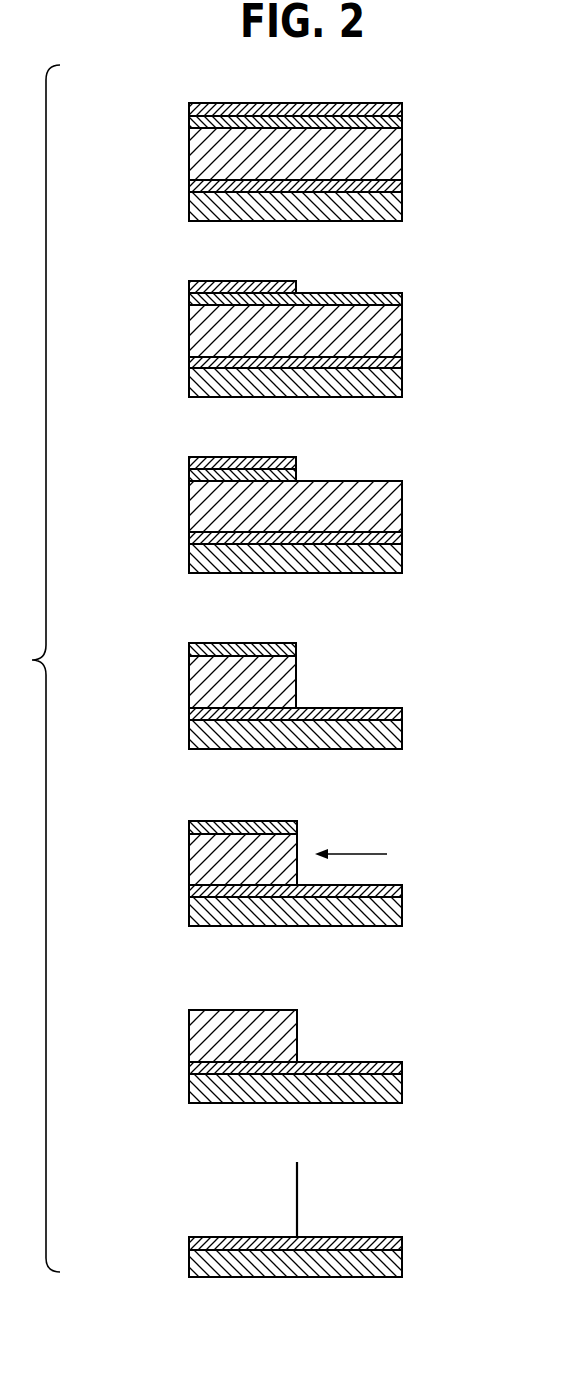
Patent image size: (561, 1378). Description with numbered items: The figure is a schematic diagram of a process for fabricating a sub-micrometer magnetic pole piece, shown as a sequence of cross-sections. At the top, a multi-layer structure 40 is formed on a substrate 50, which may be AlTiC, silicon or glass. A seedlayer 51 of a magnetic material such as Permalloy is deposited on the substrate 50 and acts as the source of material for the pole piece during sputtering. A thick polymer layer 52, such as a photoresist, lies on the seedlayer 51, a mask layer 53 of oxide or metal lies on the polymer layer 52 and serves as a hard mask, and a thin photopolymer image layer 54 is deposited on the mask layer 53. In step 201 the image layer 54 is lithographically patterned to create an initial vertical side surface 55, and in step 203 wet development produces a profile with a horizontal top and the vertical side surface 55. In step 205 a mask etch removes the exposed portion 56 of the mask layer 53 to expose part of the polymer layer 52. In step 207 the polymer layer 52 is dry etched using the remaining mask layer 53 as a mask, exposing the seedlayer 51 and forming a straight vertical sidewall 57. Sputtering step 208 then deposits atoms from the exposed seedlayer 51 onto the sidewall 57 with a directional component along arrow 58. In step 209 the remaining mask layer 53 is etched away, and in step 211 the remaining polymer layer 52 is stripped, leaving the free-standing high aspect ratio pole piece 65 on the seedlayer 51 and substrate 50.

The multi-layer structure 40 is at (210, 92).
The substrate 50 is at (402, 203).
The seedlayer 51 is at (189, 183).
The polymer layer 52 is at (402, 153).
The mask layer 53 is at (402, 122).
The image layer 54 is at (189, 108).
The vertical side surface 55 is at (296, 286).
The exposed portion of mask layer 56 is at (296, 475).
The sidewall 57 is at (296, 664).
The arrow 58 is at (355, 854).
The pole piece 65 is at (297, 1203).
The lithographic patterning step 201 is at (141, 138).
The wet development step 203 is at (141, 315).
The mask etch step 205 is at (141, 507).
The dry etch step 207 is at (141, 677).
The sputtering step 208 is at (141, 855).
The mask etch step 209 is at (141, 1050).
The polymer strip step 211 is at (142, 1259).